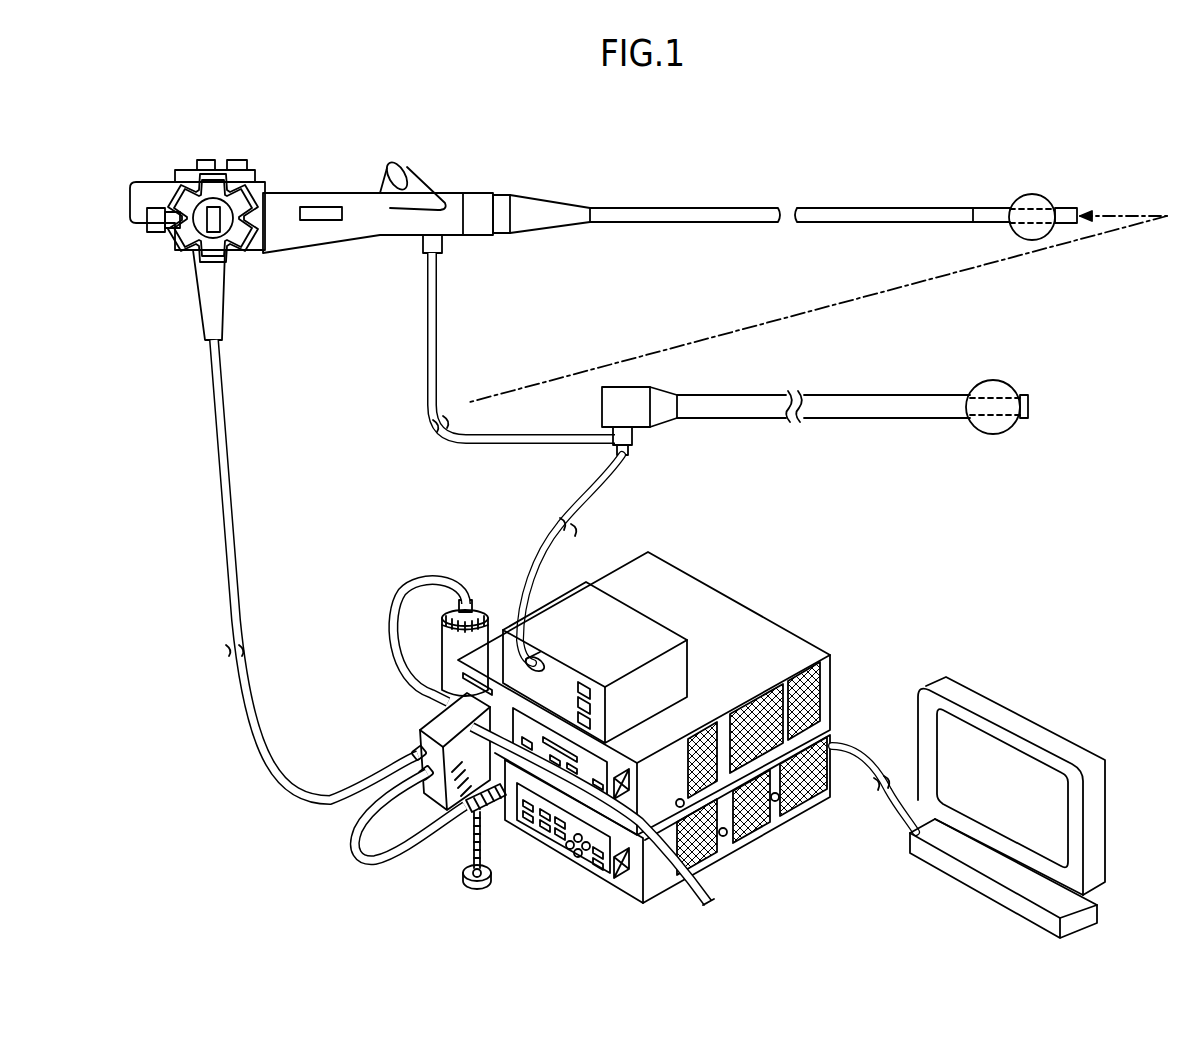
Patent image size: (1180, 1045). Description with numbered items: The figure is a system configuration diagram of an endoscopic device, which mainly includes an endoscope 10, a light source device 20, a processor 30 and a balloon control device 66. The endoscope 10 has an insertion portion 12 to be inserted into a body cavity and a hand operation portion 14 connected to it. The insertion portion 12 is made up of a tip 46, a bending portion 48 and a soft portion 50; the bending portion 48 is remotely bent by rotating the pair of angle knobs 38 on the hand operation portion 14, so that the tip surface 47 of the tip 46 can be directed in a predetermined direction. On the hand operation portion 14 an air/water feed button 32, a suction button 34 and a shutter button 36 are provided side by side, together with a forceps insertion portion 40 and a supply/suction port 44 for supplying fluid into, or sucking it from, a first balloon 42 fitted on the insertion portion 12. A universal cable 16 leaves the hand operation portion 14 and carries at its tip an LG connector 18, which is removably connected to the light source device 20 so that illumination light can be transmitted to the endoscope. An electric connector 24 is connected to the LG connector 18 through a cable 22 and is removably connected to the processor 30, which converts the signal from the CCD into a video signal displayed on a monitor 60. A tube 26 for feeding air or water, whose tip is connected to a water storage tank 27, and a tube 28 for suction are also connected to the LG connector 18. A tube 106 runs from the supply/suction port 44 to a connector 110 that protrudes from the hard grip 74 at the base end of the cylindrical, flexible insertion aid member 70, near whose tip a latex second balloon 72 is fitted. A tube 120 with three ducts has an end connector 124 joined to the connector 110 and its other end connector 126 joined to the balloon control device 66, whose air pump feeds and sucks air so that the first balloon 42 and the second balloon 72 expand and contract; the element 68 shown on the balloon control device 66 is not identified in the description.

The endoscope 10 is at (493, 161).
The insertion portion 12 is at (709, 206).
The hand operation portion 14 is at (341, 192).
The universal cable 16 is at (227, 400).
The LG connector 18 is at (420, 733).
The light source device 20 is at (644, 677).
The cable 22 is at (375, 868).
The electric connector 24 is at (490, 813).
The tube for feeding air or water 26 is at (392, 623).
The water storage tank 27 is at (490, 625).
The tube for suction 28 is at (717, 898).
The processor 30 is at (755, 838).
The air/water feed button 32 is at (238, 160).
The suction button 34 is at (208, 160).
The shutter button 36 is at (188, 180).
The angle knobs 38 is at (257, 252).
The forceps insertion portion 40 is at (402, 175).
The first balloon 42 is at (1032, 194).
The supply/suction port 44 is at (443, 245).
The tip 46 is at (1066, 207).
The tip surface 47 is at (1085, 216).
The bending portion 48 is at (985, 207).
The soft portion 50 is at (870, 207).
The monitor 60 is at (1052, 813).
The balloon control device 66 is at (688, 665).
The operation buttons 68 is at (590, 690).
The insertion aid member 70 is at (774, 473).
The second balloon 72 is at (995, 380).
The grip 74 is at (626, 387).
The tube 106 is at (428, 380).
The connector 110 is at (633, 437).
The tube 120 is at (590, 515).
The end connector 124 is at (629, 452).
The other end connector 126 is at (540, 658).